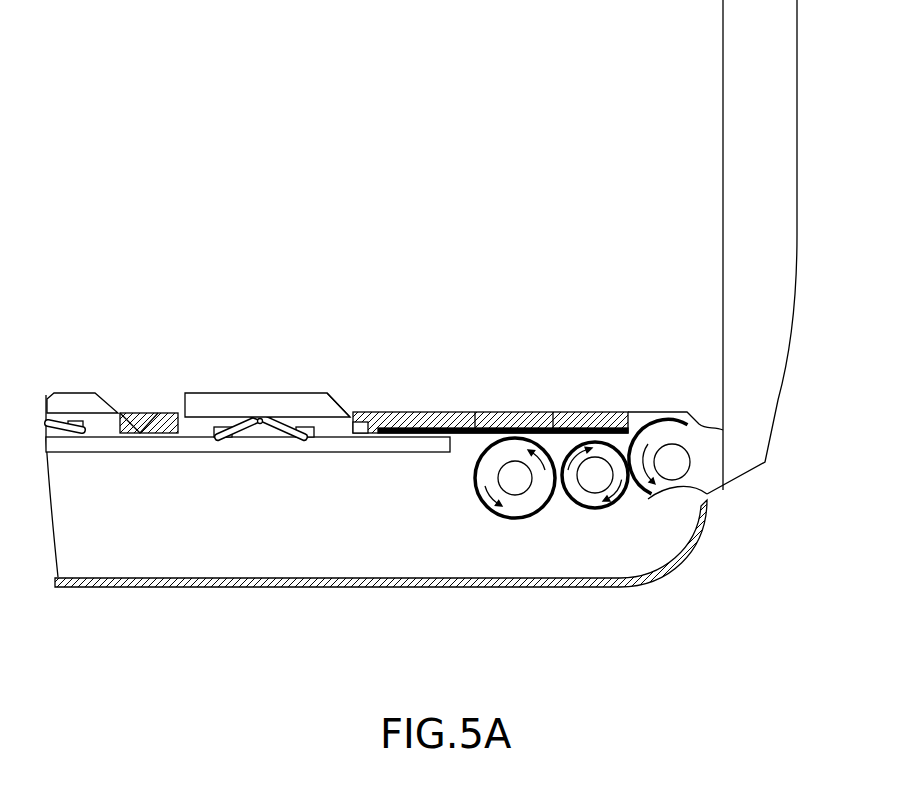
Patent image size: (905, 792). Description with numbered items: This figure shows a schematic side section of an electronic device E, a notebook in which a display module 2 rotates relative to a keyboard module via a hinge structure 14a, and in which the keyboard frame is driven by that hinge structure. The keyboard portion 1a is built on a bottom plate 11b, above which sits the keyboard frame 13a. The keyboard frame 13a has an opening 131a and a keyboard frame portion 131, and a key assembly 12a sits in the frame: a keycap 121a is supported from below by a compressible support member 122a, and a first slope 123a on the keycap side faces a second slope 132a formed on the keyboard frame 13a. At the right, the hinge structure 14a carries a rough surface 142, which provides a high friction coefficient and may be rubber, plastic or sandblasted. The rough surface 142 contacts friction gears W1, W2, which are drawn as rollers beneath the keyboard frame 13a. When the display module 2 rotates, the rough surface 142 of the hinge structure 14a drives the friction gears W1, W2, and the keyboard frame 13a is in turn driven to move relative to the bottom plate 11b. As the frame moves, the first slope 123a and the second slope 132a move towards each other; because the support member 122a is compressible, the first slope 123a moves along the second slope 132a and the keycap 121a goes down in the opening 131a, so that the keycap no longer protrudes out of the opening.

The electronic device E is at (162, 128).
The display module 2 is at (750, 162).
The device body 1a is at (132, 345).
The bottom plate 11b is at (270, 445).
The opening 131a is at (182, 422).
The lifting assembly 12a is at (288, 369).
The support member 122a is at (236, 423).
The keycap 121a is at (284, 408).
The first slope 123a is at (359, 379).
The keyboard frame 13a is at (490, 393).
The second slope 132a is at (362, 410).
The plate segment 131 is at (555, 412).
The friction gear W2 is at (515, 480).
The friction gear W1 is at (597, 483).
The hinge structure 14a is at (672, 445).
The rough surface 142 is at (708, 495).